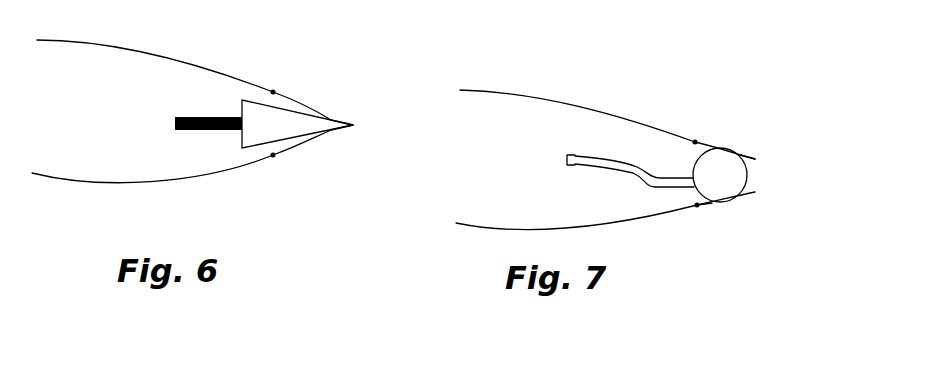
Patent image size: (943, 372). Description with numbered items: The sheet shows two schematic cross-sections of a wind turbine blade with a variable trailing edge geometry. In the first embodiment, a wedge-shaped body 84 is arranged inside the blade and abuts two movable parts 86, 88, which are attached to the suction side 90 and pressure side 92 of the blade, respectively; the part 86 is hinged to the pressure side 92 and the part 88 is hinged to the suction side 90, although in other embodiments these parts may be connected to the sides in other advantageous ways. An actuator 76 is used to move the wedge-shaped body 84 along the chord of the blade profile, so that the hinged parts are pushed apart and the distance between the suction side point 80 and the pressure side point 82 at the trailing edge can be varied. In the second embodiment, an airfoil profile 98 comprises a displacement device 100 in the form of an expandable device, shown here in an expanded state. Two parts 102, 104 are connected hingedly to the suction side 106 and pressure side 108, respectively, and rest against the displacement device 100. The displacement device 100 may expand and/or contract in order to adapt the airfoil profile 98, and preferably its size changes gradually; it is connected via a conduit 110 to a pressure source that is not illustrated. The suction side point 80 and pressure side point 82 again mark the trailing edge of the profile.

In FIG. 6, the actuator 76 is at (173, 127).
In FIG. 6, the suction side point 80 is at (332, 119).
In FIG. 7, the suction side point 80 is at (755, 159).
In FIG. 6, the pressure side point 82 is at (330, 130).
In FIG. 7, the pressure side point 82 is at (755, 192).
In FIG. 6, the wedge-shaped body 84 is at (250, 110).
In FIG. 6, the movable part 86 is at (290, 152).
In FIG. 6, the movable part 88 is at (308, 98).
In FIG. 6, the suction side 90 is at (206, 62).
In FIG. 6, the pressure side 92 is at (230, 174).
In FIG. 7, the airfoil profile 98 is at (567, 62).
In FIG. 7, the displacement device 100 is at (715, 163).
In FIG. 7, the part 102 is at (763, 147).
In FIG. 7, the part 104 is at (712, 205).
In FIG. 7, the suction side 106 is at (655, 117).
In FIG. 7, the pressure side 108 is at (613, 230).
In FIG. 7, the conduit 110 is at (565, 160).